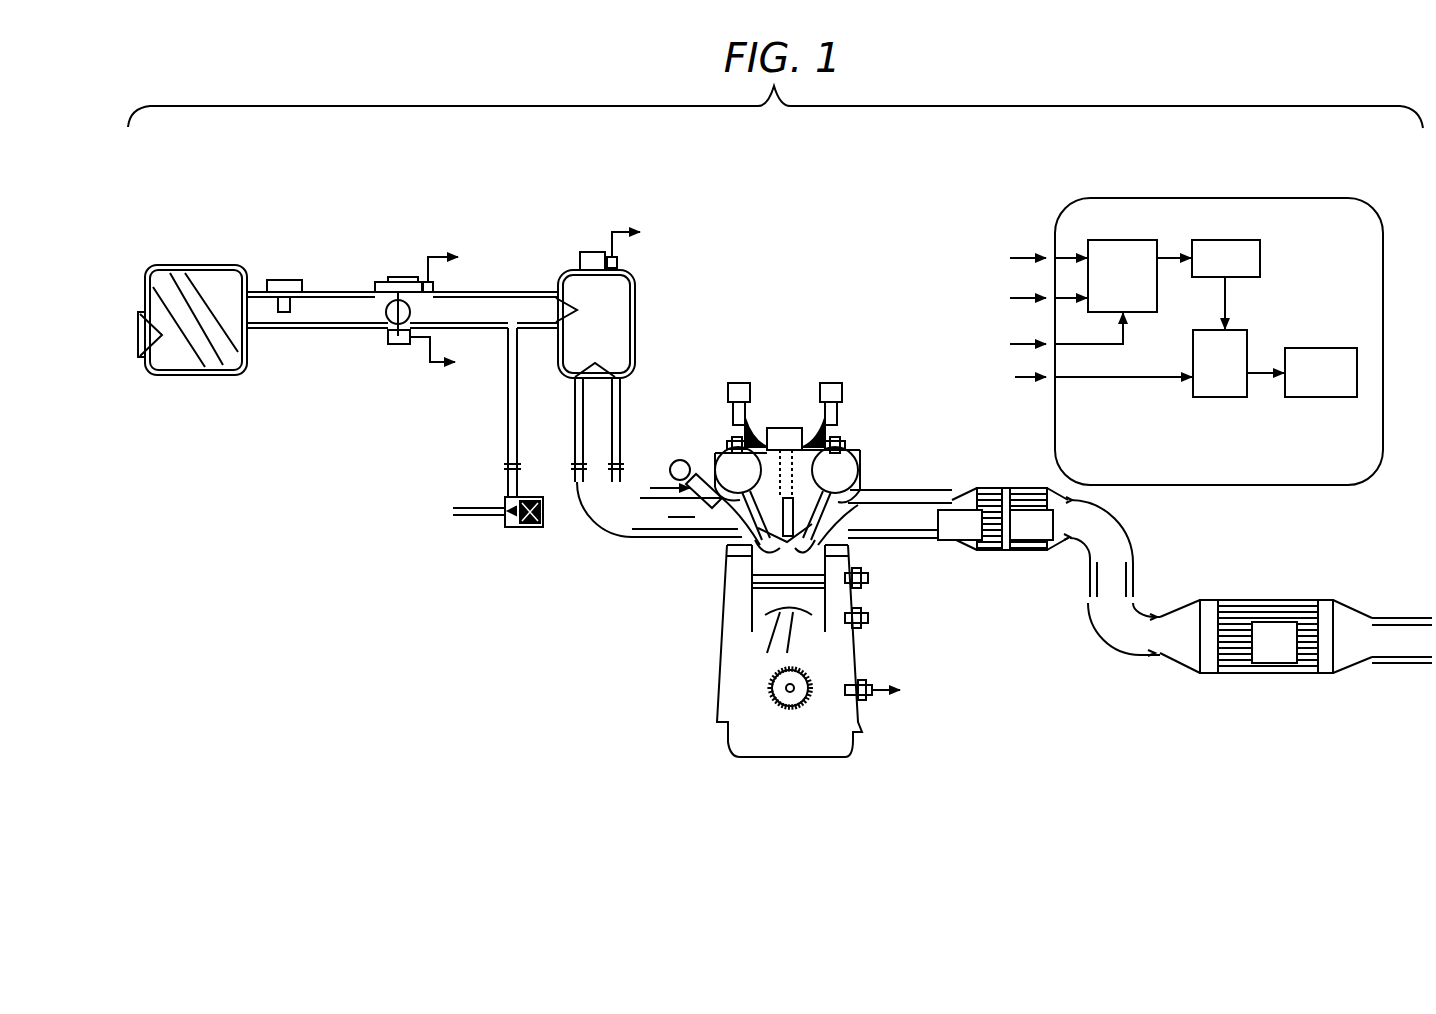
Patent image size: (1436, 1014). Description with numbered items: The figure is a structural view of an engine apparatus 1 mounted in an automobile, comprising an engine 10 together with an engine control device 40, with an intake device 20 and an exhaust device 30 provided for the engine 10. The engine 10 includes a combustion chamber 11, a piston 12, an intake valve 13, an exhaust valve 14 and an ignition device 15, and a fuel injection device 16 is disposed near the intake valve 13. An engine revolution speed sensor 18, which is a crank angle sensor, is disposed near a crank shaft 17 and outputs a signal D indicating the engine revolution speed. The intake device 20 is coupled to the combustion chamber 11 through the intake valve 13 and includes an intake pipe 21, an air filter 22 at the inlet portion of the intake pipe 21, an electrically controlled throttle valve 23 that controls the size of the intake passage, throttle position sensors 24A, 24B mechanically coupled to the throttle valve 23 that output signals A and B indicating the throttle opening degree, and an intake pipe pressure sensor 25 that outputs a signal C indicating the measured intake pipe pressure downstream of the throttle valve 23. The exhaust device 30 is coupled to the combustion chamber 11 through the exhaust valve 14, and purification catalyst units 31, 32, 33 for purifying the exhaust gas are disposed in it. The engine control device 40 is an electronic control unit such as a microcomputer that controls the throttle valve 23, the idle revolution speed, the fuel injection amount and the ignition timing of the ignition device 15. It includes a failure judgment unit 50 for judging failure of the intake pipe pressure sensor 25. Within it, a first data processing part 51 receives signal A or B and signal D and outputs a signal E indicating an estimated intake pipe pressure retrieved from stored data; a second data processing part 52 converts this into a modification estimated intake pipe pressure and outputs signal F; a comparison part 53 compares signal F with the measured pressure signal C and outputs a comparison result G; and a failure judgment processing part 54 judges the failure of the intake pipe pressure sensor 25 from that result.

The engine apparatus 1 is at (795, 300).
The engine 10 is at (718, 708).
The combustion chamber 11 is at (827, 597).
The piston 12 is at (755, 612).
The intake valve 13 is at (758, 547).
The exhaust valve 14 is at (818, 548).
The ignition device 15 is at (753, 613).
The fuel injection device 16 is at (697, 480).
The crank shaft 17 is at (792, 706).
The engine revolution speed sensor 18 is at (843, 703).
The intake device 20 is at (345, 403).
The intake pipe 21 is at (524, 292).
The air filter 22 is at (197, 265).
The throttle valve 23 is at (386, 305).
The throttle position sensor 24A is at (421, 277).
The throttle position sensor 24B is at (398, 345).
The intake pipe pressure sensor 25 is at (594, 252).
The exhaust device 30 is at (1113, 650).
The purification catalyst unit 31 is at (960, 540).
The purification catalyst unit 32 is at (1033, 540).
The purification catalyst unit 33 is at (1274, 673).
The engine control device 40 is at (1185, 315).
The failure judgment unit 50 is at (1206, 303).
The first data processing part 51 is at (1143, 312).
The second data processing part 52 is at (1260, 260).
The comparison part 53 is at (1220, 397).
The failure judgment processing part 54 is at (1324, 397).